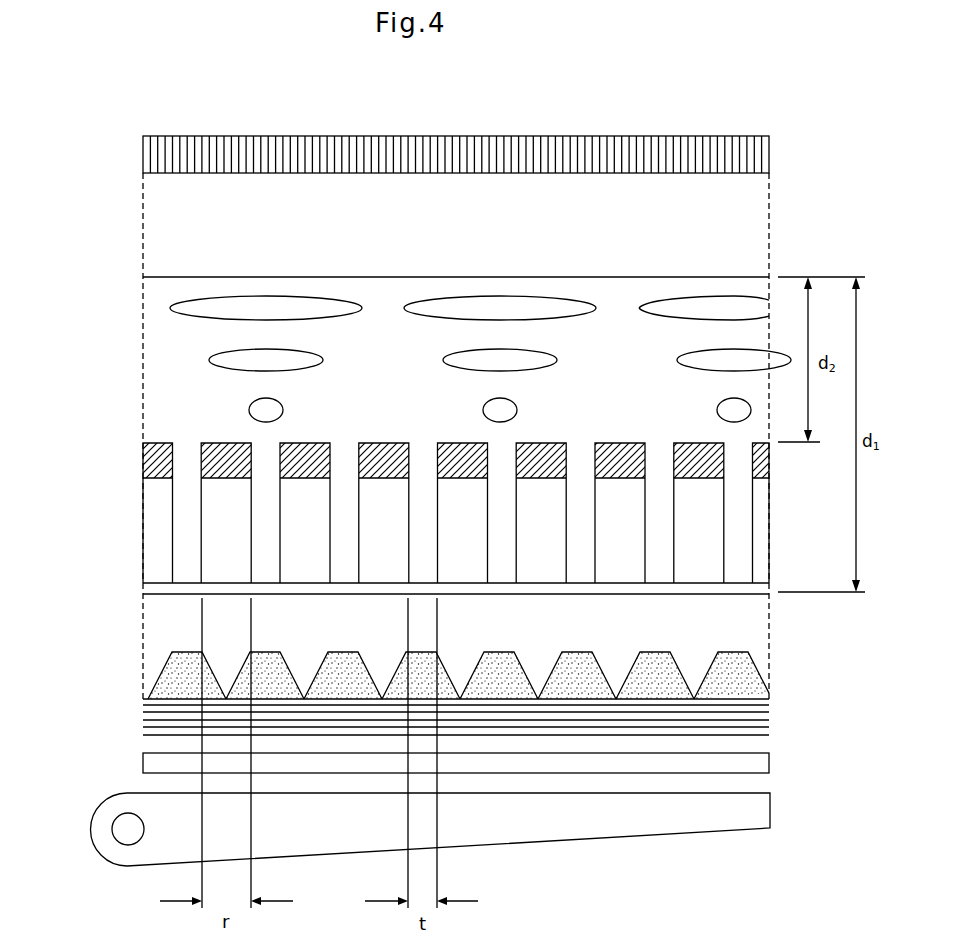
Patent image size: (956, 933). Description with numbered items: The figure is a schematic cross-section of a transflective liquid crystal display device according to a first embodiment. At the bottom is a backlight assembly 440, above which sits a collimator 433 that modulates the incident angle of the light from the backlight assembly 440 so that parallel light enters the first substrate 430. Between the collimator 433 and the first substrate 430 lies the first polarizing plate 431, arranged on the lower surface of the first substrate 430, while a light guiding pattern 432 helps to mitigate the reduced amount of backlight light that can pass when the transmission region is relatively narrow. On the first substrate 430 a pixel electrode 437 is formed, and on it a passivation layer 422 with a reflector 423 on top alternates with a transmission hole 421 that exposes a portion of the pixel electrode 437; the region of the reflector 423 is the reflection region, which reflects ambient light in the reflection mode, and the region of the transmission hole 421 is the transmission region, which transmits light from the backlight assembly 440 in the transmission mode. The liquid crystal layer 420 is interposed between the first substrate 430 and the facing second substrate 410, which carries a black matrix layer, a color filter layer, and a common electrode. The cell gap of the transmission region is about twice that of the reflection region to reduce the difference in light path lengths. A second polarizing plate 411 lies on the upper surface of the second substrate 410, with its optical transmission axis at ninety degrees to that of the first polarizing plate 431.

The second substrate 410 is at (760, 207).
The second polarizing plate 411 is at (760, 152).
The liquid crystal layer 420 is at (128, 278).
The transmission hole 421 is at (182, 447).
The passivation layer 422 is at (215, 537).
The reflector 423 is at (220, 467).
The first substrate 430 is at (505, 702).
The first polarizing plate 431 is at (752, 714).
The light guiding pattern 432 is at (762, 693).
The collimator 433 is at (760, 763).
The pixel electrode 437 is at (160, 594).
The backlight assembly 440 is at (82, 797).